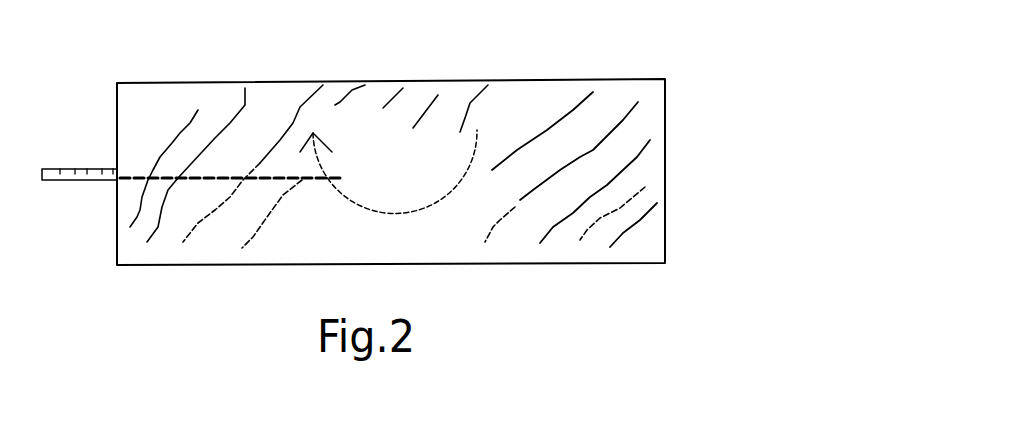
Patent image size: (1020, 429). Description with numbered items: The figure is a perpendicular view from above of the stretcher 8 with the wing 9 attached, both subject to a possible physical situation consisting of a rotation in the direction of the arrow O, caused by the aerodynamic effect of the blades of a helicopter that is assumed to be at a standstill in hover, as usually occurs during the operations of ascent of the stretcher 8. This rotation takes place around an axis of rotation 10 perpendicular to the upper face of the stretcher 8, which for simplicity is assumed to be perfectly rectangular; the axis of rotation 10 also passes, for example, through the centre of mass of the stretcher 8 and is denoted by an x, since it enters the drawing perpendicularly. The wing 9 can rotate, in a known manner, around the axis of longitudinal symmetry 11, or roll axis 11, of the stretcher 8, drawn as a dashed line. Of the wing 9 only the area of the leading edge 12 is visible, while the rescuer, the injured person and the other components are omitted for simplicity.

The stretcher 8 is at (568, 281).
The wing 9 is at (73, 192).
The axis of rotation 10 is at (400, 190).
The axis of longitudinal symmetry 11 is at (218, 165).
The leading edge 12 is at (74, 175).
The arrow O is at (352, 225).